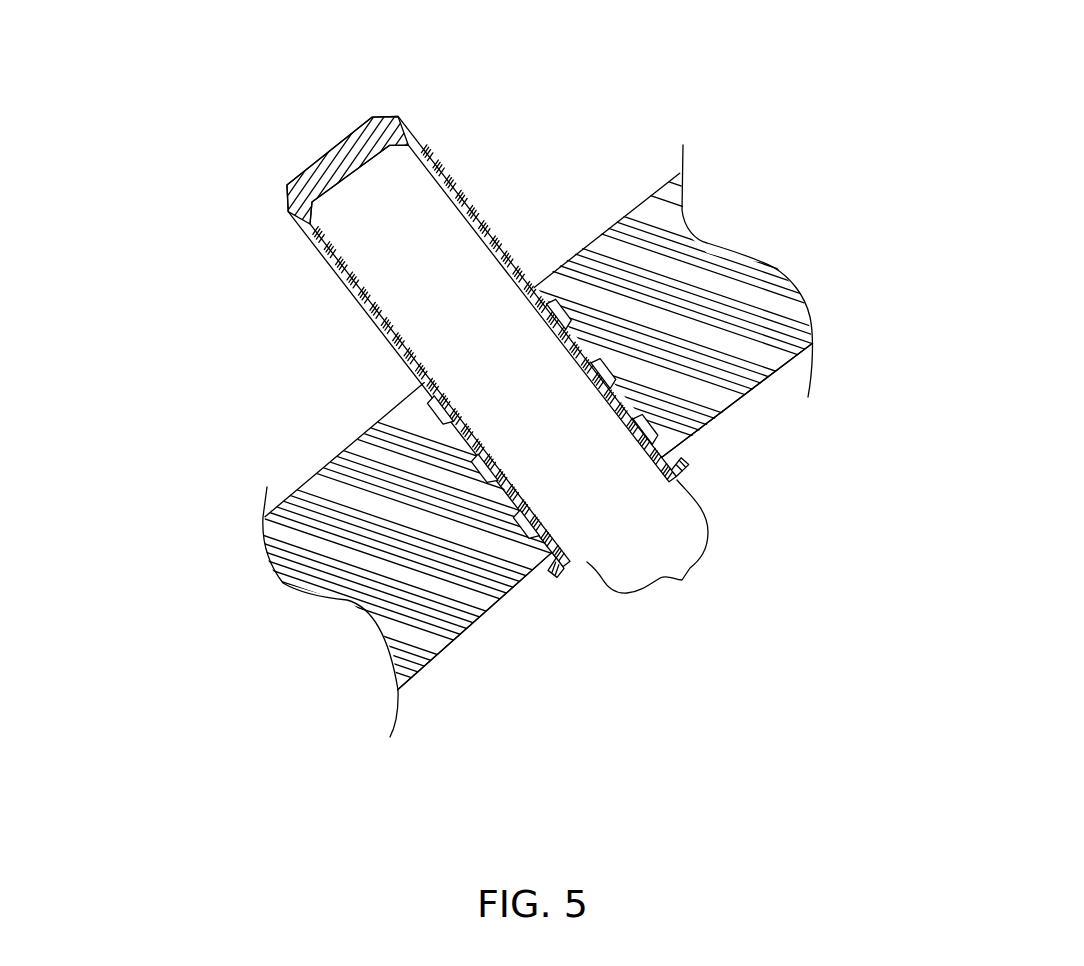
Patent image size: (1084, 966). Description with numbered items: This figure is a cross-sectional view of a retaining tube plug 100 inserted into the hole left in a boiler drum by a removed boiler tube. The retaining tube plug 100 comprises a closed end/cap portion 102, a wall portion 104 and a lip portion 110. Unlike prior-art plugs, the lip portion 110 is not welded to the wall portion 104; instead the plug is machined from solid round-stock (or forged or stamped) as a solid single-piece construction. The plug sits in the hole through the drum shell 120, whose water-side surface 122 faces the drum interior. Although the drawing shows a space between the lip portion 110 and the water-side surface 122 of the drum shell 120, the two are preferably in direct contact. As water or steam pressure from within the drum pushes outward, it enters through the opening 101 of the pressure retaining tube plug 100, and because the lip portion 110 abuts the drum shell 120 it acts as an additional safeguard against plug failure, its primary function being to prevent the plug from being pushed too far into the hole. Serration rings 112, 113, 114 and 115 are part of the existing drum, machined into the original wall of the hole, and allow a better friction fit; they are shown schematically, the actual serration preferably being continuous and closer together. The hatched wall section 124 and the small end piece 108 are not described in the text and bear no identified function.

The retaining tube plug 100 is at (483, 391).
The opening 101 is at (688, 560).
The closed end/cap portion 102 is at (339, 163).
The wall portion 104 is at (409, 299).
The end flange 108 is at (714, 528).
The lip portion 110 is at (782, 491).
The serration ring 112 is at (470, 362).
The serration ring 113 is at (533, 356).
The serration ring 114 is at (515, 449).
The serration ring 115 is at (596, 414).
The drum shell 120 is at (410, 555).
The water-side surface 122 is at (653, 548).
The mounting block 124 is at (527, 425).